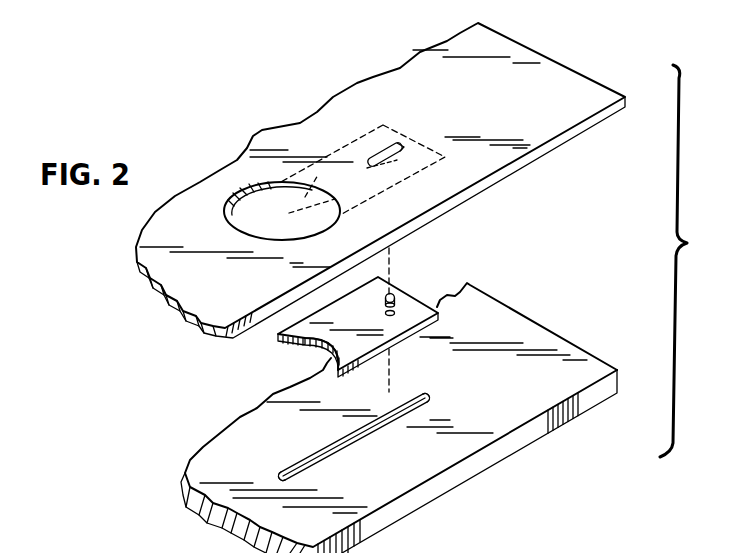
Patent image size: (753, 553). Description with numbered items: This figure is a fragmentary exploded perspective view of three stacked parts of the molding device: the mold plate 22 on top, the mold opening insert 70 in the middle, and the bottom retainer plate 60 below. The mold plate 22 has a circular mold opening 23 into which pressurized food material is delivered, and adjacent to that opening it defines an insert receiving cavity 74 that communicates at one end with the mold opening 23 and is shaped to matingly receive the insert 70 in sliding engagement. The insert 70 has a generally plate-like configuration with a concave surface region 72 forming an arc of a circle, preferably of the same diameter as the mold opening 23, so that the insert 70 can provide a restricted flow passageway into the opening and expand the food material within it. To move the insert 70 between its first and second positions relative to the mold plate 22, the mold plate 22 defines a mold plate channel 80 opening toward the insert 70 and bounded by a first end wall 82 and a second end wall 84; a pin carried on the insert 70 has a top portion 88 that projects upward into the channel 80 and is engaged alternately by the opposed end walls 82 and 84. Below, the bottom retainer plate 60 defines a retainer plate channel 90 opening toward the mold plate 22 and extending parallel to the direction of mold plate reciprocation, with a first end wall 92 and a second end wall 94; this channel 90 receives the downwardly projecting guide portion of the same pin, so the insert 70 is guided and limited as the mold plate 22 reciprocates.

The mold plate 22 is at (512, 97).
The mold opening 23 is at (258, 193).
The bottom retainer plate 60 is at (481, 457).
The mold opening insert 70 is at (408, 308).
The concave surface region 72 is at (297, 340).
The insert receiving cavity 74 is at (298, 203).
The mold plate channel 80 is at (381, 153).
The first end wall 82 is at (378, 157).
The second end wall 84 is at (398, 146).
The pin top portion 88 is at (385, 299).
The retainer plate channel 90 is at (365, 438).
The first end wall 92 is at (291, 467).
The second end wall 94 is at (425, 396).